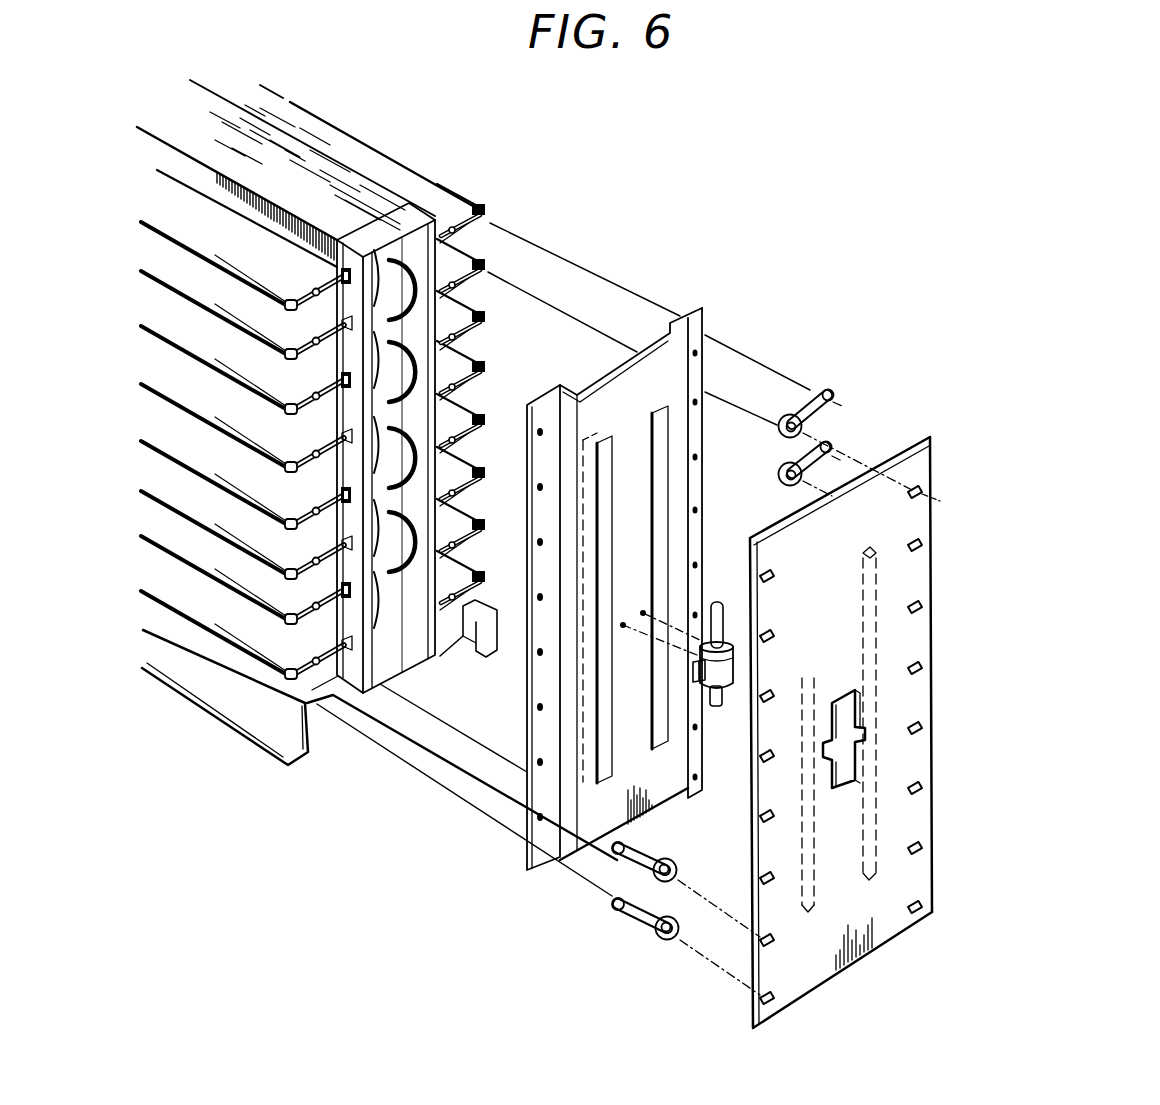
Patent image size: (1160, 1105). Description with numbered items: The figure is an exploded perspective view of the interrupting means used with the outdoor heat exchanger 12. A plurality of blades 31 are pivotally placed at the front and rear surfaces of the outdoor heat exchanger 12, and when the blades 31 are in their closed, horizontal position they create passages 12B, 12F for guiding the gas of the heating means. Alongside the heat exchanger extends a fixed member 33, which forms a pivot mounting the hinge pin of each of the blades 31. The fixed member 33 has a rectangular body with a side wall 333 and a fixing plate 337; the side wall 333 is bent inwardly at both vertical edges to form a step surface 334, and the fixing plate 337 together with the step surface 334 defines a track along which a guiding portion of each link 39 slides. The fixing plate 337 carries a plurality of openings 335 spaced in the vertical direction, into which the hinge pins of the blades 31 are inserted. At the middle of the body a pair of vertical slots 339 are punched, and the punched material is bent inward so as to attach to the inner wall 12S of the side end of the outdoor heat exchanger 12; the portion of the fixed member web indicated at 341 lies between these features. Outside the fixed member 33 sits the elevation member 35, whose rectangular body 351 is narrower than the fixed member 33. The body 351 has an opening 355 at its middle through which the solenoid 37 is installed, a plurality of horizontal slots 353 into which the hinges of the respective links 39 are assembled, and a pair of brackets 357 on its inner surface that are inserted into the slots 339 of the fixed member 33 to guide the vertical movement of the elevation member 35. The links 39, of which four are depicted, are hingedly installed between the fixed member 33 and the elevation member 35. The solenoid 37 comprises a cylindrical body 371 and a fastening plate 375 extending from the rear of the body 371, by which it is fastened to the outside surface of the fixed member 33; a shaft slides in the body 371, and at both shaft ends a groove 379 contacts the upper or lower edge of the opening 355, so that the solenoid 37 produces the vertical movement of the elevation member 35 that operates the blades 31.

The outdoor heat exchanger 12 is at (318, 178).
The passage 12B is at (318, 456).
The passage 12F is at (514, 358).
The inner wall 12S is at (432, 655).
The blades 31 is at (247, 647).
The fixed member 33 is at (555, 632).
The side wall 333 is at (603, 813).
The step surface 334 is at (572, 847).
The openings 335 is at (540, 430).
The fixing plate 337 is at (533, 865).
The vertical slots 339 is at (603, 500).
The bracket web 341 is at (582, 742).
The elevation member 35 is at (886, 739).
The body 351 is at (932, 688).
The horizontal slots 353 is at (921, 488).
The opening 355 is at (857, 757).
The brackets 357 is at (818, 860).
The solenoid 37 is at (762, 715).
The cylindrical body 371 is at (725, 667).
The fastening plate 375 is at (700, 667).
The groove 379 is at (712, 605).
The links 39 is at (816, 394).